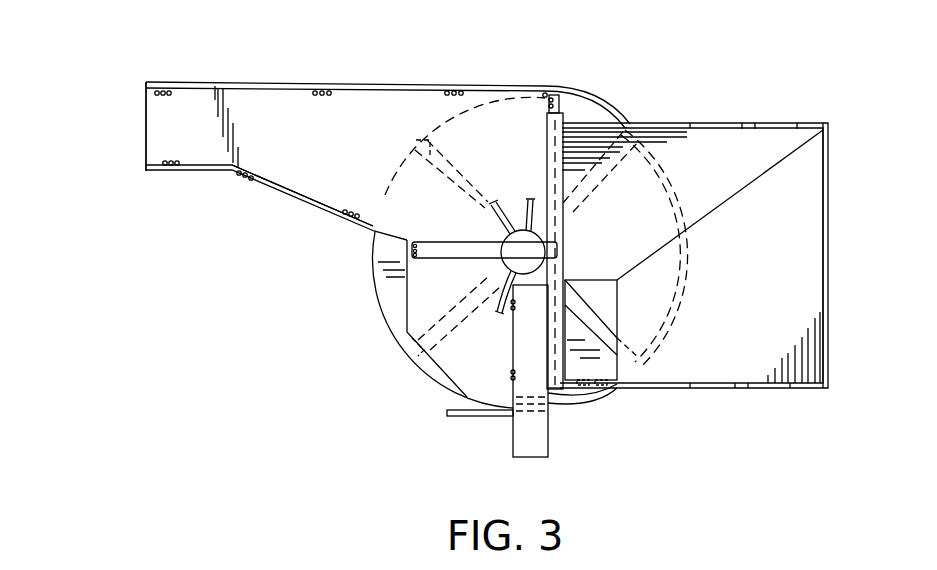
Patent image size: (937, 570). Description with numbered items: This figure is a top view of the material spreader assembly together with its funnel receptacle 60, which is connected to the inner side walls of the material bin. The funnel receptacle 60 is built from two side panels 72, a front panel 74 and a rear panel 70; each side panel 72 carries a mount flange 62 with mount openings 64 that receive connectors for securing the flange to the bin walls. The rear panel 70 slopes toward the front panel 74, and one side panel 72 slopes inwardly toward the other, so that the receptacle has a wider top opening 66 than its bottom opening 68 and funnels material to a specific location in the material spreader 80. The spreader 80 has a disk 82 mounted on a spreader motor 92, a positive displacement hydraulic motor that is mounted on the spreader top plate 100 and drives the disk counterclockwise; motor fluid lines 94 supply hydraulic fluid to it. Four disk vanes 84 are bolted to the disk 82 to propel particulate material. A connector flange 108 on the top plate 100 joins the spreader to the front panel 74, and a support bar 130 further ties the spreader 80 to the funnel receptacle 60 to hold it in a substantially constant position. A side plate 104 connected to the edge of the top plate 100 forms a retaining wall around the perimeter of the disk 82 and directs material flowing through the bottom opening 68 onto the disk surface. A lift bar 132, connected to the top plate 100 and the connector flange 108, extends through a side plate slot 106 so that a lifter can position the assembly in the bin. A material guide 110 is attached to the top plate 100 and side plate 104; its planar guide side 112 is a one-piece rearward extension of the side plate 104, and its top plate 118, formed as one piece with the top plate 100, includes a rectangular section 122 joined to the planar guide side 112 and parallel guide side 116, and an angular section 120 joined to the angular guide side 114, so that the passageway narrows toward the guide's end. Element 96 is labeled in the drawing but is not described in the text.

The funnel receptacle 60 is at (836, 152).
The mount flange 62 is at (672, 123).
The mount openings 64 is at (748, 123).
The top opening 66 is at (827, 212).
The bottom opening 68 is at (597, 288).
The rear panel 70 is at (805, 311).
The side panels 72 is at (695, 143).
The front panel 74 is at (560, 152).
The material spreader 80 is at (362, 333).
The disk 82 is at (380, 281).
The disk vanes 84 is at (598, 327).
The spreader motor 92 is at (520, 233).
The motor fluid lines 94 is at (488, 212).
The curved fan blade 96 is at (495, 295).
The spreader top plate 100 is at (453, 363).
The side plate 104 is at (595, 402).
The side plate slot 106 is at (557, 392).
The connector flange 108 is at (553, 388).
The material guide 110 is at (279, 66).
The planar guide side 112 is at (152, 82).
The angular guide side 114 is at (273, 192).
The parallel guide side 116 is at (177, 170).
The top plate 118 is at (206, 91).
The angular section 120 is at (307, 178).
The rectangular section 122 is at (180, 112).
The support bar 130 is at (427, 247).
The lift bar 132 is at (535, 448).